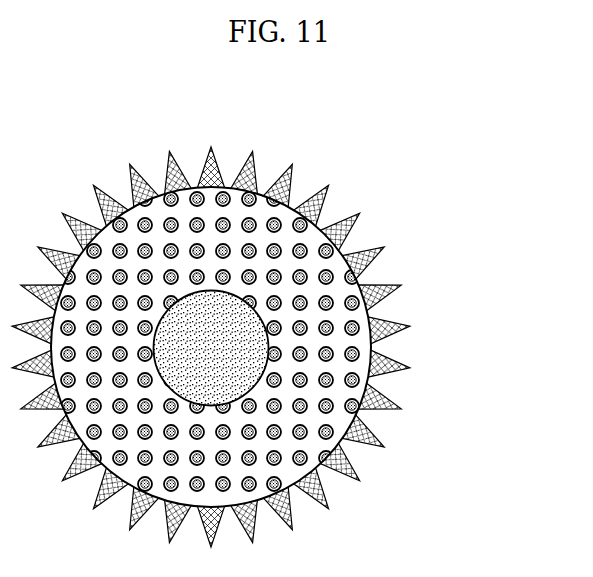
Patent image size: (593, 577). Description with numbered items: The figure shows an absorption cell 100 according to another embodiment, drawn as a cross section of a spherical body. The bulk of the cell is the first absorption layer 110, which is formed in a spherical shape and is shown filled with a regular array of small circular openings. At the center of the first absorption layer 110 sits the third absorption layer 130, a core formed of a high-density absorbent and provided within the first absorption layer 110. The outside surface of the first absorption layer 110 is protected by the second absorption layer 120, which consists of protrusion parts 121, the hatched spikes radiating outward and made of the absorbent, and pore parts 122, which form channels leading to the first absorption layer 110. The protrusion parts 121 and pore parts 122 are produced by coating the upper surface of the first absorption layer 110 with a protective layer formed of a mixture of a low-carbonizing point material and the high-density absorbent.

The absorption cell 100 is at (204, 97).
The first absorption layer 110 is at (303, 458).
The second absorption layer 120 is at (492, 272).
The protrusion parts 121 is at (393, 341).
The pore parts 122 is at (369, 311).
The third absorption layer 130 is at (250, 356).